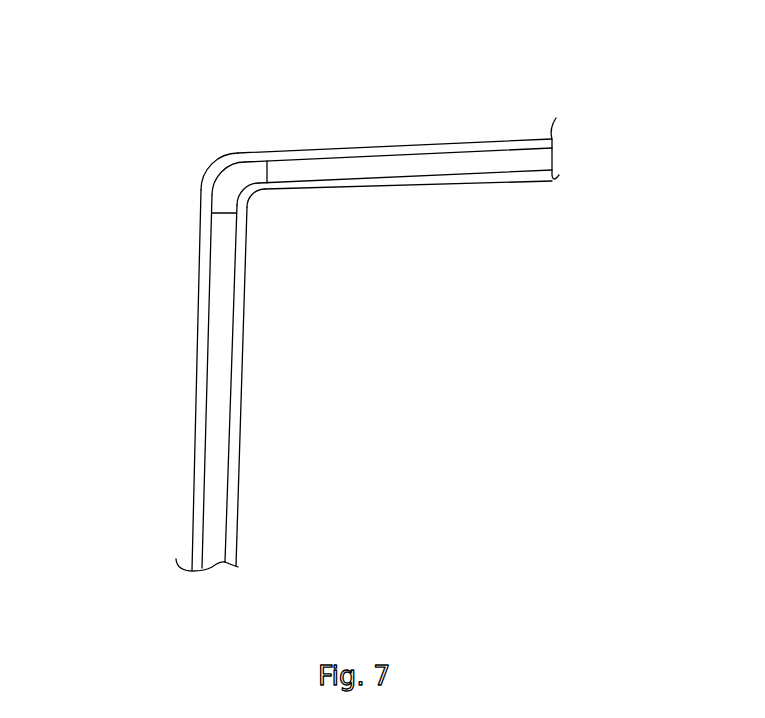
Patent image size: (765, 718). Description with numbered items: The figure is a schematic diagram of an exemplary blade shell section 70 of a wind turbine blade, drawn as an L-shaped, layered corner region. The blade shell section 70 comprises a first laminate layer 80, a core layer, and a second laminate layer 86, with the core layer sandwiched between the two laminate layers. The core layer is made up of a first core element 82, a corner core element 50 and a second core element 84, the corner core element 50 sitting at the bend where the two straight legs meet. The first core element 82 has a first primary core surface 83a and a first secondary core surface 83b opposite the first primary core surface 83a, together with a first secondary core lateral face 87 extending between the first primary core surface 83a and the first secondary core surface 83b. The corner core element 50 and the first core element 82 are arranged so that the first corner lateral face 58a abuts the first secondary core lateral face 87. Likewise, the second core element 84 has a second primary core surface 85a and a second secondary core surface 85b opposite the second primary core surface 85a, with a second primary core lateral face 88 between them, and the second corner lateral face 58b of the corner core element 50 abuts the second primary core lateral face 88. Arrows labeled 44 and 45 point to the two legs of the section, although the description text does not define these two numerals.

The first frame member 44 is at (122, 346).
The second frame member 45 is at (352, 106).
The corner core element 50 is at (230, 178).
The first corner lateral face 58a is at (267, 162).
The second corner lateral face 58b is at (213, 212).
The blade shell section 70 is at (520, 383).
The first laminate layer 80 is at (198, 464).
The first core element 82 is at (432, 162).
The first primary core surface 83a is at (520, 147).
The first secondary core surface 83b is at (488, 170).
The second core element 84 is at (215, 327).
The second primary core surface 85a is at (208, 412).
The second secondary core surface 85b is at (232, 383).
The second laminate layer 86 is at (233, 488).
The first secondary core lateral face 87 is at (268, 168).
The second primary core lateral face 88 is at (213, 213).